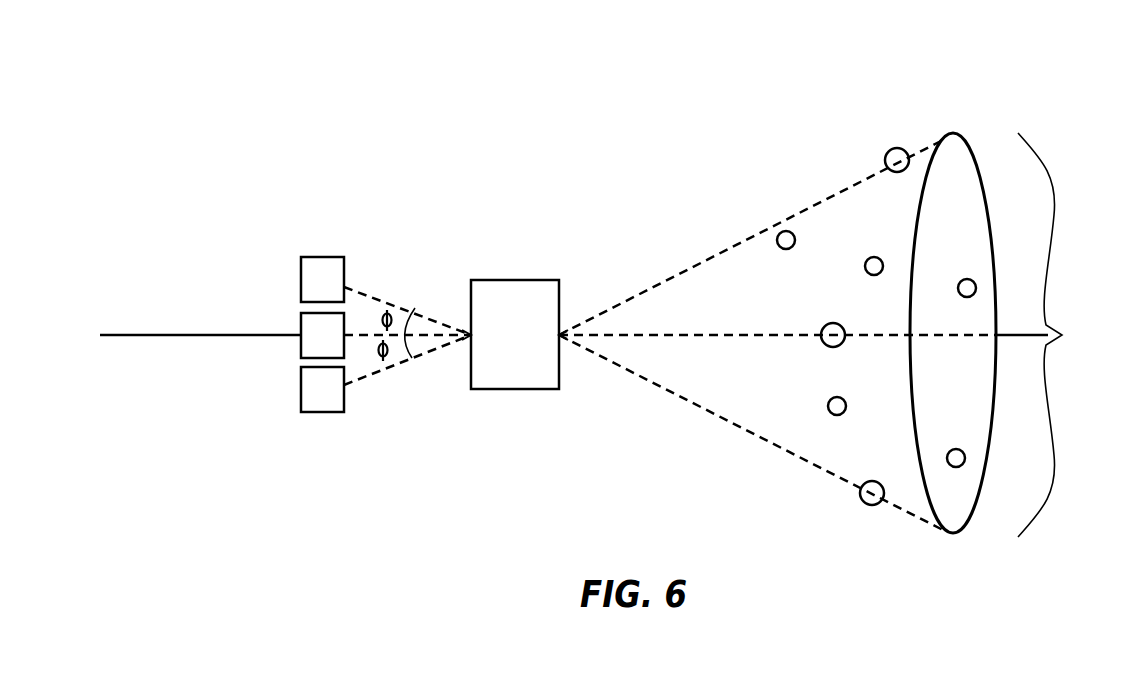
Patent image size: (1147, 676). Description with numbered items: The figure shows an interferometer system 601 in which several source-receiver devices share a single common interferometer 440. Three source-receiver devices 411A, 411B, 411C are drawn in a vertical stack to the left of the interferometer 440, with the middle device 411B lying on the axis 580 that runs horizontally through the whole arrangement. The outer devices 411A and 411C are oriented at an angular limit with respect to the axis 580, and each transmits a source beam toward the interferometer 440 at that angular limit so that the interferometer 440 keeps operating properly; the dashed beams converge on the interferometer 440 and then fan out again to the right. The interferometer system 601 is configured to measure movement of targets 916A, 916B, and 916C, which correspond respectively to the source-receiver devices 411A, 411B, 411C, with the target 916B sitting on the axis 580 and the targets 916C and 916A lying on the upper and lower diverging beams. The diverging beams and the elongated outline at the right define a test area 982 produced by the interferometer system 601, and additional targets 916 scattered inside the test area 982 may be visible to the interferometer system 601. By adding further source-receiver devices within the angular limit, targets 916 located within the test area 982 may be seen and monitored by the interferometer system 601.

The interferometer system 601 is at (564, 124).
The axis 580 is at (143, 335).
The source-receiver device 411A is at (301, 280).
The source-receiver device 411B is at (345, 316).
The source-receiver device 411C is at (301, 385).
The interferometer 440 is at (518, 280).
The targets 916 is at (779, 249).
The target 916A is at (866, 505).
The target 916B is at (822, 343).
The target 916C is at (896, 148).
The test area 982 is at (1011, 335).